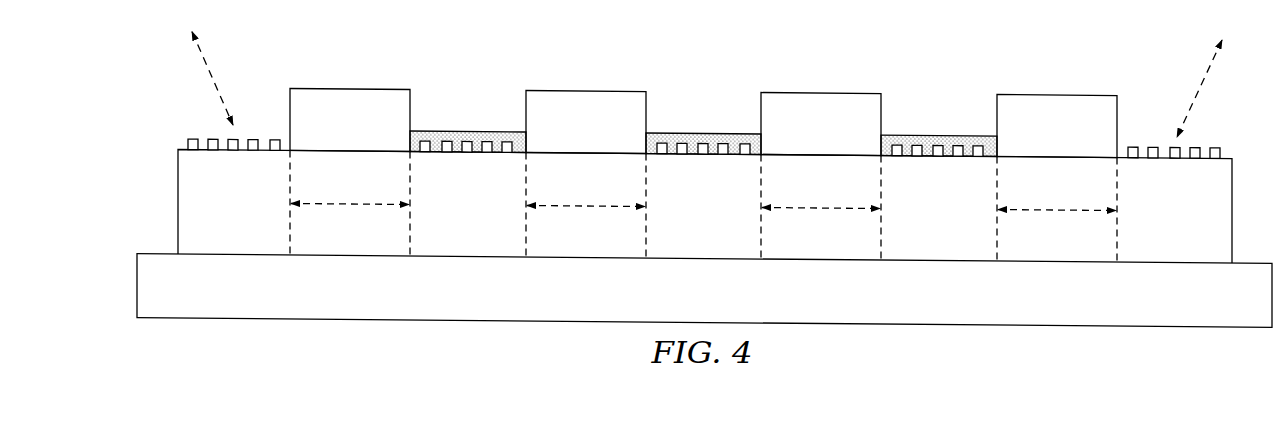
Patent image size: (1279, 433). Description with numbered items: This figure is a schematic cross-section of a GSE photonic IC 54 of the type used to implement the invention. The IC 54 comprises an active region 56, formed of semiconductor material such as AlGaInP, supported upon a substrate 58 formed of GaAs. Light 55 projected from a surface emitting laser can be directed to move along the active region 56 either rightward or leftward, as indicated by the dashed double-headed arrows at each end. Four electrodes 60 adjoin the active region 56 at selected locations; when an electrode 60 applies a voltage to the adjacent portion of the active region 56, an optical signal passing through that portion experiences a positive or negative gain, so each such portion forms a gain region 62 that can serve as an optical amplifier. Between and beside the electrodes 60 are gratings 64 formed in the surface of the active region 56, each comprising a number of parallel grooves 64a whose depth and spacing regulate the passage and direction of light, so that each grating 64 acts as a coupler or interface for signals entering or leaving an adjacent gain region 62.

The GSE photonic IC 54 is at (125, 108).
The light 55 is at (212, 76).
The active region 56 is at (178, 212).
The substrate 58 is at (137, 282).
The electrode 60 is at (348, 84).
The gain region 62 is at (338, 188).
The grating 64 is at (455, 124).
The grooves 64a is at (253, 136).